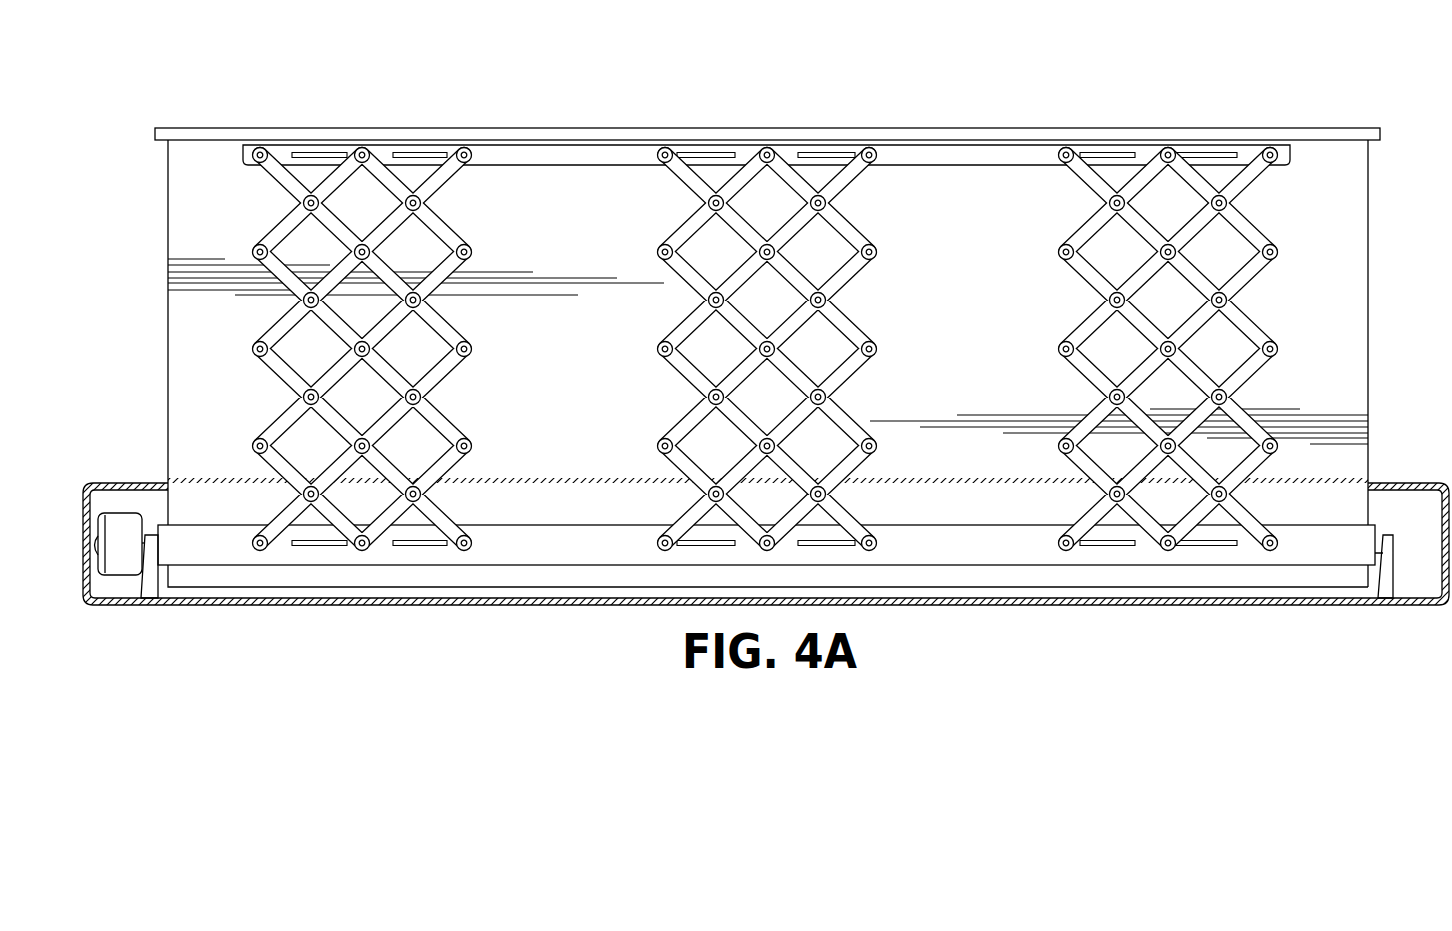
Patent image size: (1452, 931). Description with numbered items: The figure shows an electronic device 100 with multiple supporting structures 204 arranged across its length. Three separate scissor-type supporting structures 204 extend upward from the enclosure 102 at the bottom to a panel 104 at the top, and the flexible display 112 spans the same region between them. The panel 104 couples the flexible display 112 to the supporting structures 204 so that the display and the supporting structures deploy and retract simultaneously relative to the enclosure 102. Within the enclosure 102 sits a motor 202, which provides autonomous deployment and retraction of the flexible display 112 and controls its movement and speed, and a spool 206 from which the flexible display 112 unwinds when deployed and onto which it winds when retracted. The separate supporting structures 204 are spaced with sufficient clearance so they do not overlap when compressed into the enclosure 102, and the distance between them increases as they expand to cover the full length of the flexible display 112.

The electronic device 100 is at (972, 104).
The enclosure 102 is at (132, 483).
The panel 104 is at (213, 128).
The flexible display 112 is at (168, 333).
The motor 202 is at (123, 575).
The supporting structure 204 is at (455, 365).
The spool 206 is at (160, 545).